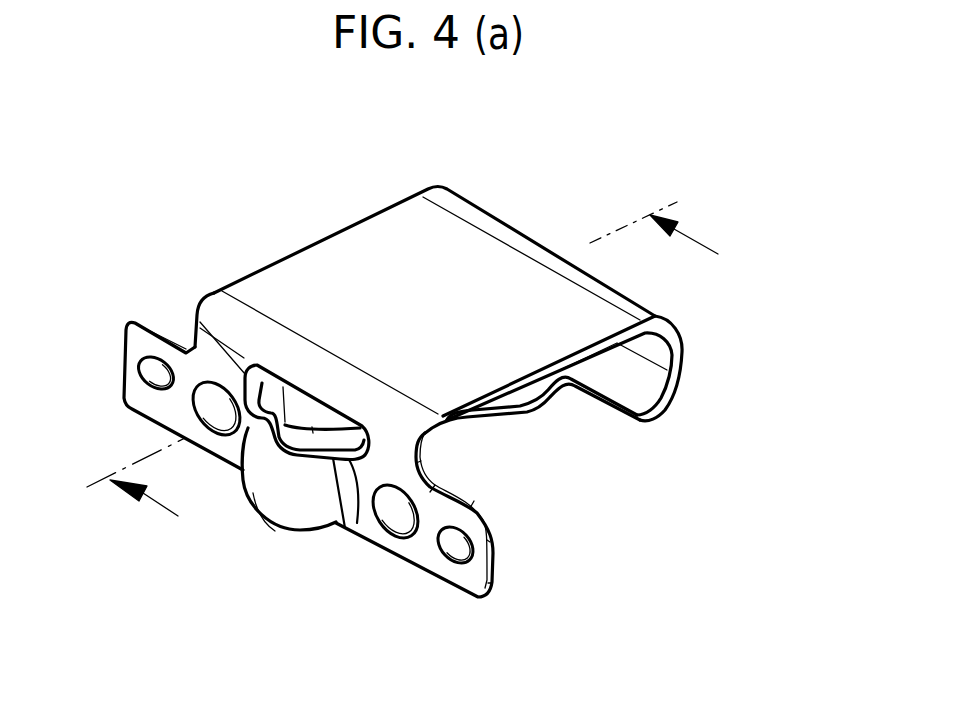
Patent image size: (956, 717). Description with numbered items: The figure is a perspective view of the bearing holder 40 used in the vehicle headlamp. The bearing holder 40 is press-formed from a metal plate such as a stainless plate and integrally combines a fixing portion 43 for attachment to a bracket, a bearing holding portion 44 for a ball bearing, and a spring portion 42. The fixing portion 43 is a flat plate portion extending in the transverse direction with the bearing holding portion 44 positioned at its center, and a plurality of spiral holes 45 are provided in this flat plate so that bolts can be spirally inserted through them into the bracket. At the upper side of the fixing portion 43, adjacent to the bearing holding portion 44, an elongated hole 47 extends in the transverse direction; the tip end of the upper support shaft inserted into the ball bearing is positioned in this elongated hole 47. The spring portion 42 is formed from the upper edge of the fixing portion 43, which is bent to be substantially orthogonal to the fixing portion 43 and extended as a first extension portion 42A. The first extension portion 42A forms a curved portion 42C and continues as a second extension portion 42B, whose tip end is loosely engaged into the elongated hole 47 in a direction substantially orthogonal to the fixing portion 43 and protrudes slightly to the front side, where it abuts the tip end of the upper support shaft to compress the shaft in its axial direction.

The bearing holder 40 is at (242, 222).
The spring portion 42 is at (603, 410).
The first extension portion 42A is at (490, 255).
The second extension portion 42B is at (527, 412).
The curved portion 42C is at (680, 358).
The fixing portion 43 is at (425, 553).
The bearing holding portion 44 is at (273, 490).
The spiral holes 45 is at (185, 399).
The elongated hole 47 is at (199, 316).